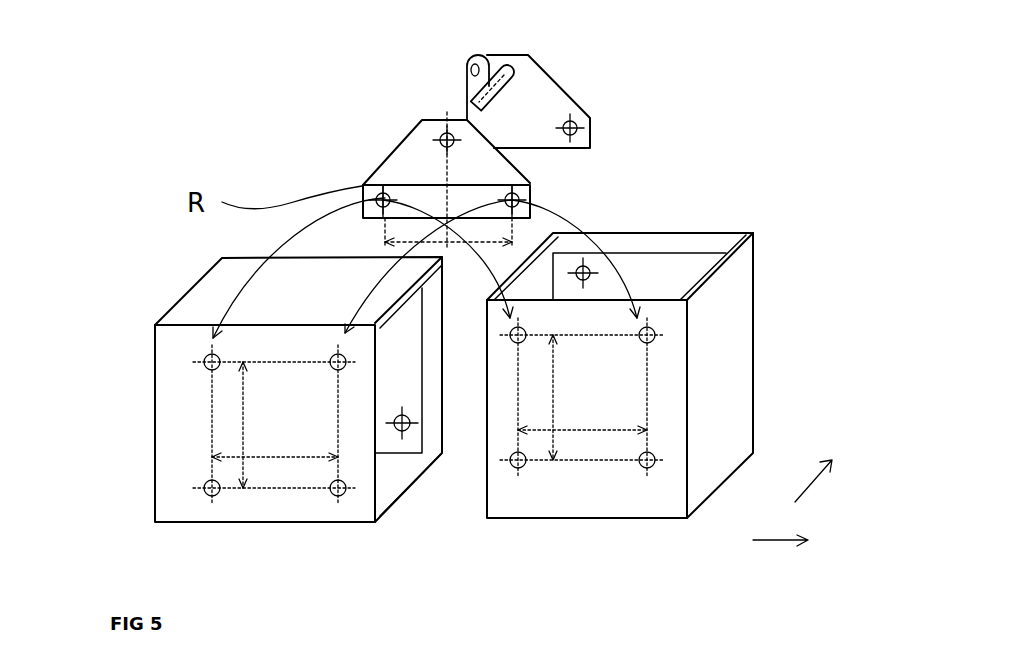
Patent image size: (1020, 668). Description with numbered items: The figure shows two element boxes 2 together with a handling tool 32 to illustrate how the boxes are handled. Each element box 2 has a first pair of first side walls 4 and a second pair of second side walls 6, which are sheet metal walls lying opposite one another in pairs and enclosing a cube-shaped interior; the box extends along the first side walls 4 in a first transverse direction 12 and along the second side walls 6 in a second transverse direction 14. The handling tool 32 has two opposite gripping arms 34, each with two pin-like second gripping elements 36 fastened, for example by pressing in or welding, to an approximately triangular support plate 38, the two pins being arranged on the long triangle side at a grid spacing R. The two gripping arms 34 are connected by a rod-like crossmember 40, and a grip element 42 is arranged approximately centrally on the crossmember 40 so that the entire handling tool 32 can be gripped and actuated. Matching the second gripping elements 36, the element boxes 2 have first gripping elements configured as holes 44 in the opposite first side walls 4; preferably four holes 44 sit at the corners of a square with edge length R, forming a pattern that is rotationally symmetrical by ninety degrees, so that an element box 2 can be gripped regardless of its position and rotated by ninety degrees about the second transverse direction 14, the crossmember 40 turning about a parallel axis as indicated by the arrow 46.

The element box 2 is at (177, 383).
The first side walls 4 is at (172, 458).
The second side walls 6 is at (207, 294).
The first transverse direction 12 is at (775, 543).
The second transverse direction 14 is at (813, 482).
The handling tool 32 is at (598, 72).
The gripping arms 34 is at (407, 163).
The second gripping elements 36 is at (556, 148).
The support plate 38 is at (537, 107).
The crossmember 40 is at (452, 90).
The grip element 42 is at (465, 85).
The holes 44 is at (340, 500).
The arrow 46 is at (462, 62).